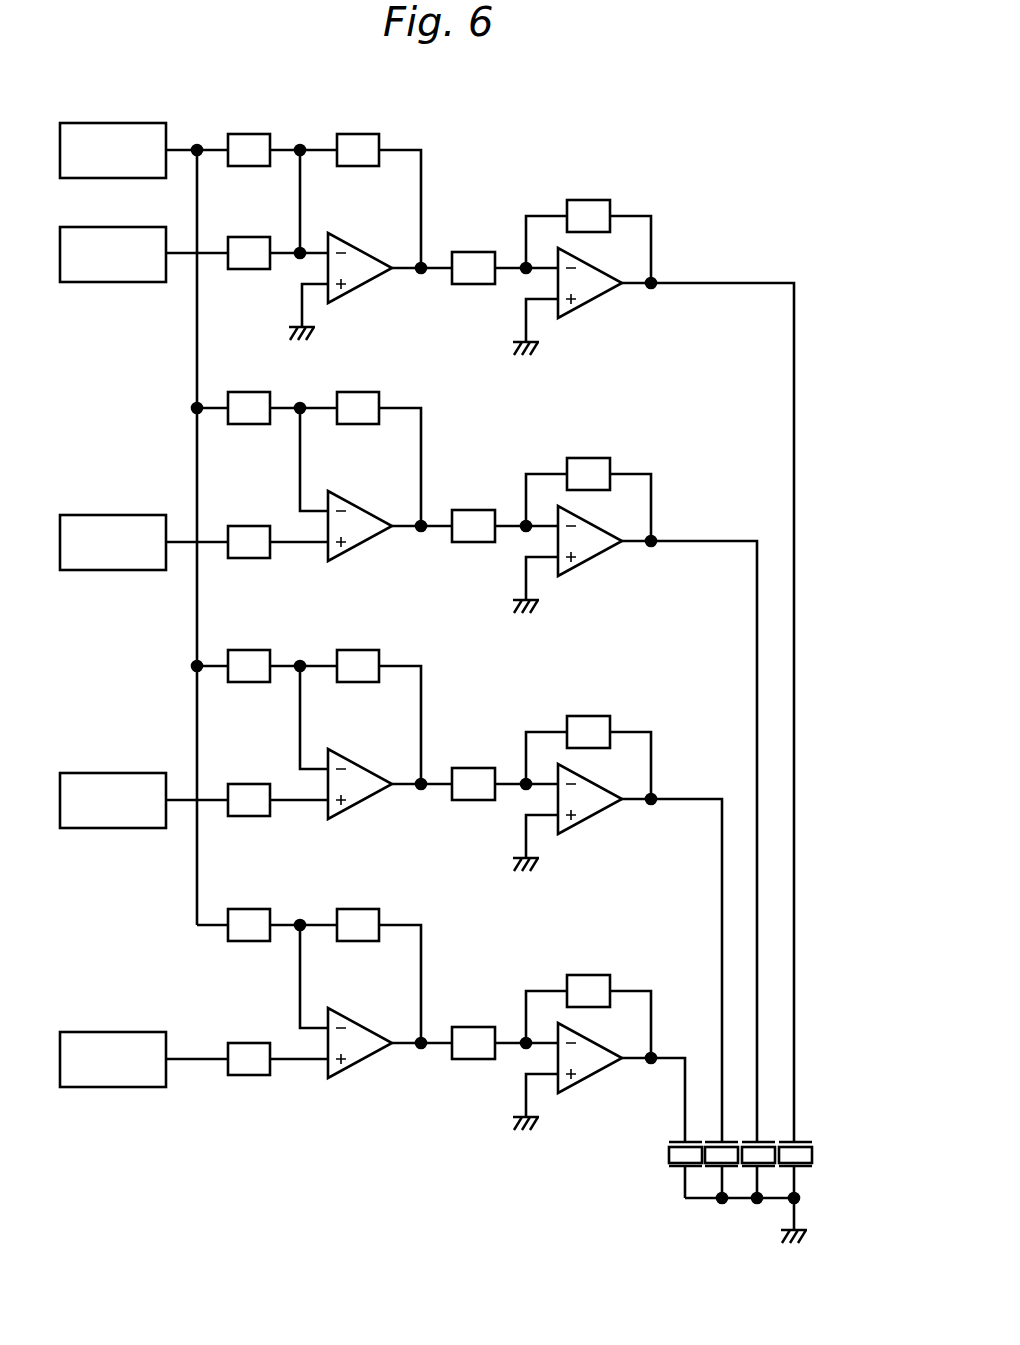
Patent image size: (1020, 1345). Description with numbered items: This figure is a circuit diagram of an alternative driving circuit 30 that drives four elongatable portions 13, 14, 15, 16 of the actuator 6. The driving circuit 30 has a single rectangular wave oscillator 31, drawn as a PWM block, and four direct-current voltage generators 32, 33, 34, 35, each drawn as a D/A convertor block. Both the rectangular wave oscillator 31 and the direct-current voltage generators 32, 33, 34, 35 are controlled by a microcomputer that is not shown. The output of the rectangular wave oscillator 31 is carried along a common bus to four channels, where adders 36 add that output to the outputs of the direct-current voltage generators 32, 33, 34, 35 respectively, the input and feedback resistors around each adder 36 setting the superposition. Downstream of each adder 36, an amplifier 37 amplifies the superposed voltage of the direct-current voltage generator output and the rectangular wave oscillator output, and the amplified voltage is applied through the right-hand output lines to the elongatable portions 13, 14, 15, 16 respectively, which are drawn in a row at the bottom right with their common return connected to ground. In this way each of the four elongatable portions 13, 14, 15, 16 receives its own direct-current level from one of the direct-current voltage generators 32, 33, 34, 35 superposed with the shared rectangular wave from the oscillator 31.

The piezoelectric actuator 6 is at (676, 1172).
The elongatable portion 13 is at (799, 1140).
The elongatable portion 14 is at (763, 1140).
The elongatable portion 15 is at (726, 1140).
The elongatable portion 16 is at (690, 1140).
The driving circuit 30 is at (571, 130).
The rectangular wave oscillator 31 is at (113, 122).
The direct-current voltage generator 32 is at (112, 284).
The direct-current voltage generator 33 is at (112, 571).
The direct-current voltage generator 34 is at (112, 829).
The direct-current voltage generator 35 is at (112, 1088).
The adder 36 is at (358, 290).
The amplifier 37 is at (590, 308).